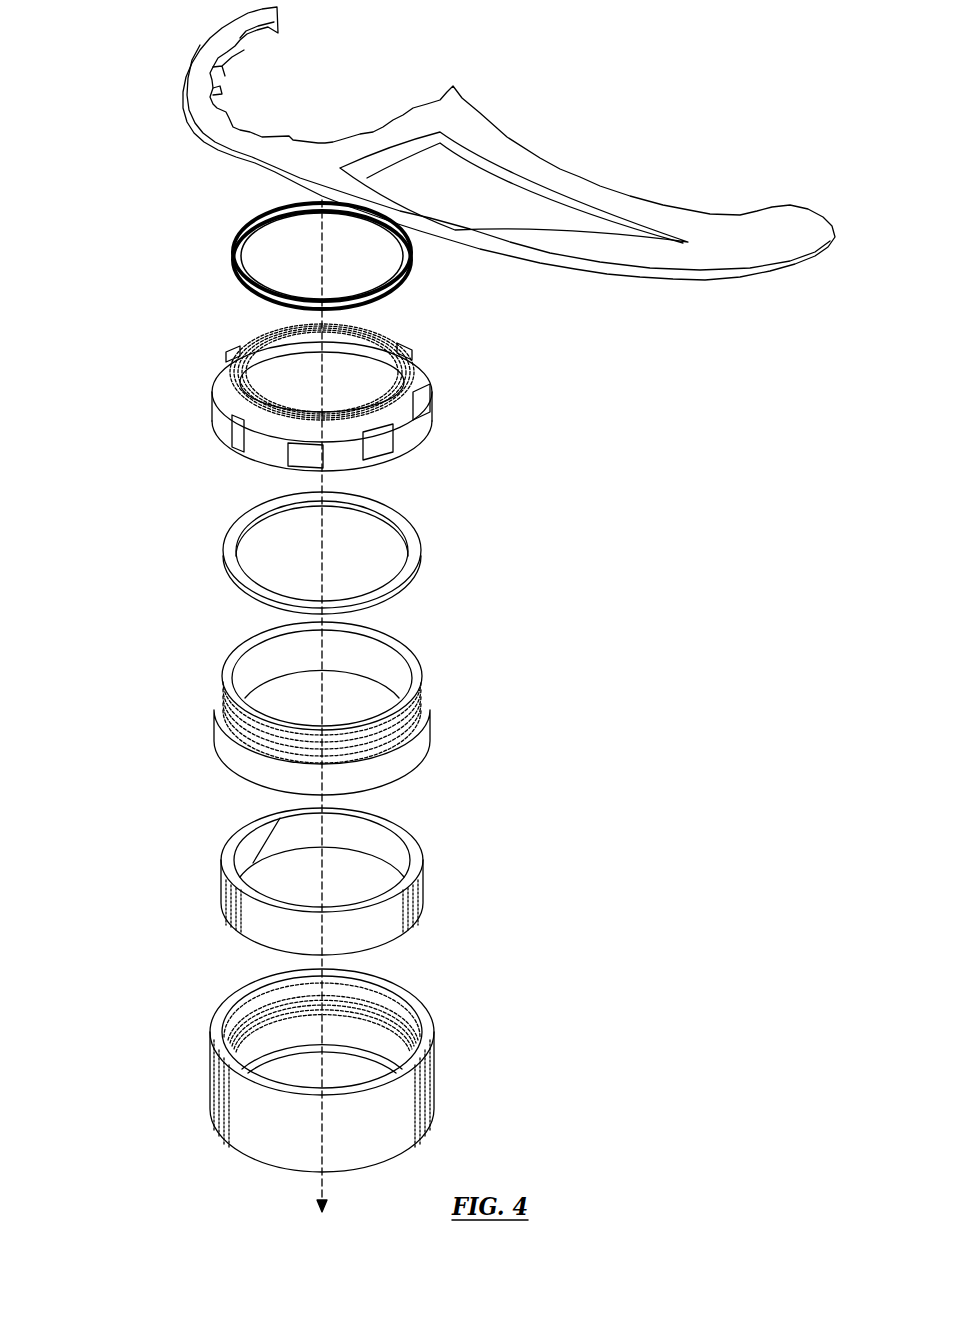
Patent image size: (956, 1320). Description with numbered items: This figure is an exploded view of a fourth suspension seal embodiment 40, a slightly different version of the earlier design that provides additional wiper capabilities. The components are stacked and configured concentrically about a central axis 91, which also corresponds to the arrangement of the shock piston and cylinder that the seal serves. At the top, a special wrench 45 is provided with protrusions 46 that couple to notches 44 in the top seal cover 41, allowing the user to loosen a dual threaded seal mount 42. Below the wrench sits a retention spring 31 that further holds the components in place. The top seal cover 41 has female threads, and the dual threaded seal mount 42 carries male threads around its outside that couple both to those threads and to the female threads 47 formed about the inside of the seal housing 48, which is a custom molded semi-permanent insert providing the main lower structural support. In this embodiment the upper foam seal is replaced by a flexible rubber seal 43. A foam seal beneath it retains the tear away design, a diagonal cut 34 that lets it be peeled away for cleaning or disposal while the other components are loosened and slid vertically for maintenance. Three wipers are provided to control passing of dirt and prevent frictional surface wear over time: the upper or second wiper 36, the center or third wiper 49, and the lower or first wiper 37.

The suspension seal embodiment 40 is at (86, 263).
The special wrench 45 is at (613, 278).
The protrusions 46 is at (221, 82).
The retention spring 31 is at (229, 262).
The top seal cover 41 is at (405, 423).
The upper/second wiper 36 is at (400, 362).
The notches 44 is at (380, 447).
The rubber seal 43 is at (393, 587).
The dual threaded seal mount 42 is at (417, 680).
The center/third wiper 49 is at (370, 743).
The tear away (peel) design / diagonal cut 34 is at (280, 818).
The seal housing 48 is at (407, 1093).
The female threads 47 is at (248, 1000).
The lower/first wiper 37 is at (240, 1060).
The axis 91 is at (320, 1188).